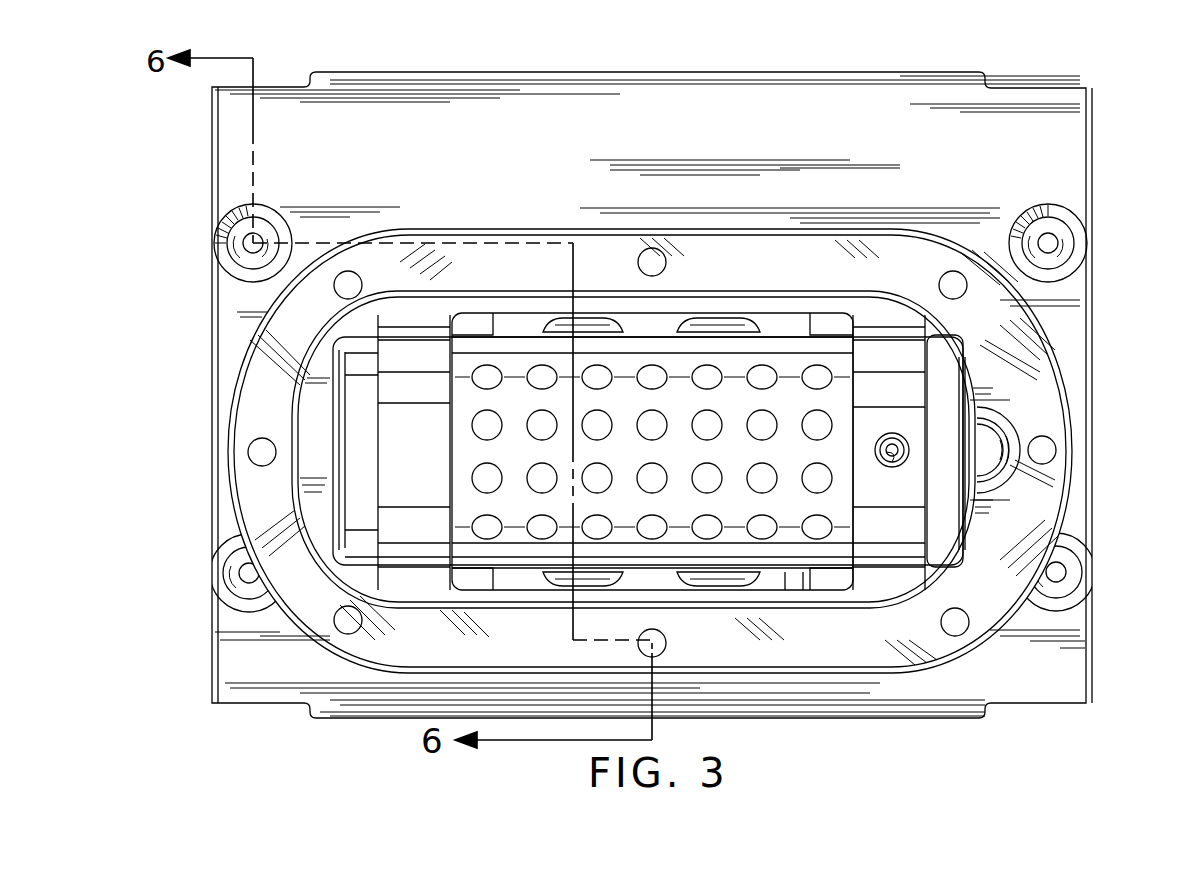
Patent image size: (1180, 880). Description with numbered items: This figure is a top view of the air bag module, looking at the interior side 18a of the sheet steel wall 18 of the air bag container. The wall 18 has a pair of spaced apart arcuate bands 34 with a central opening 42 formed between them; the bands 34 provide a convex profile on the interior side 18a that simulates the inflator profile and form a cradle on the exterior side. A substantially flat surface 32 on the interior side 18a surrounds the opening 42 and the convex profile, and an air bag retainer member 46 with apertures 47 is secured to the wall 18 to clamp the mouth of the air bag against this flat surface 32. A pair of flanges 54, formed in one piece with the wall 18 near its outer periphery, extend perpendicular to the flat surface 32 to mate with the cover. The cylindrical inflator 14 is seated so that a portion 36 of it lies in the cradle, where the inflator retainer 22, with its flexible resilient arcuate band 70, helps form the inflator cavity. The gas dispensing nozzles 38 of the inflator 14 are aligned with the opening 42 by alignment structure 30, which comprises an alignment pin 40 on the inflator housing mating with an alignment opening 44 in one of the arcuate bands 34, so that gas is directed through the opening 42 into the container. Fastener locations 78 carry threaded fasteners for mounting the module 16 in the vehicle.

The inflator 14 is at (948, 330).
The mounting plate 16 is at (1104, 229).
The wall 18 is at (526, 598).
The interior side 18a is at (292, 125).
The inflator retainer 22 is at (785, 575).
The alignment structure 30 is at (906, 422).
The substantially flat surface 32 is at (433, 310).
The arcuate bands 34 is at (403, 465).
The portion of the inflator 36 is at (378, 498).
The gas dispensing nozzles 38 is at (667, 368).
The alignment pin 40 is at (892, 455).
The central opening 42 is at (820, 350).
The alignment opening 44 is at (890, 436).
The air bag retainer member 46 is at (985, 300).
The apertures 47 is at (1042, 436).
The flanges 54 is at (960, 85).
The arcuate band 70 is at (803, 577).
The fastener locations 78 is at (243, 207).